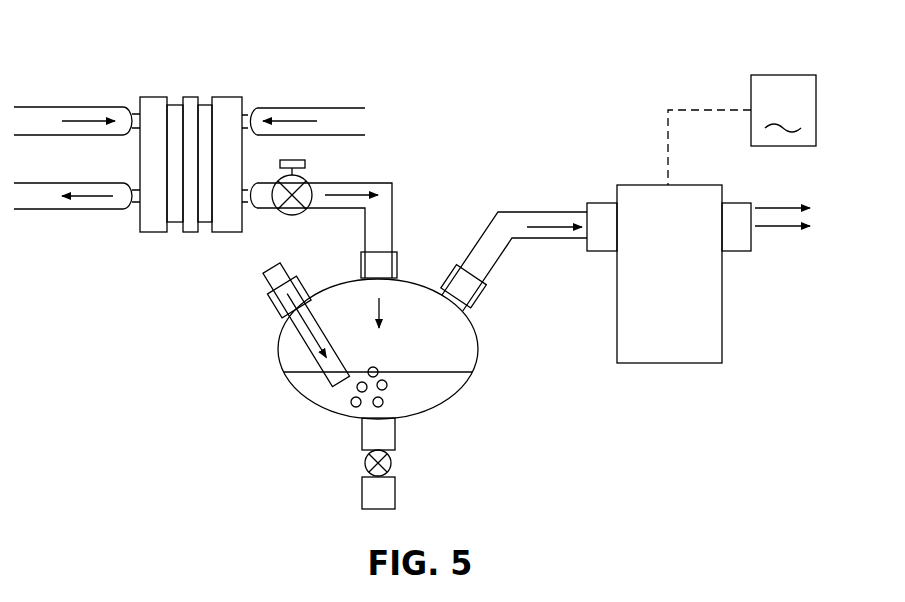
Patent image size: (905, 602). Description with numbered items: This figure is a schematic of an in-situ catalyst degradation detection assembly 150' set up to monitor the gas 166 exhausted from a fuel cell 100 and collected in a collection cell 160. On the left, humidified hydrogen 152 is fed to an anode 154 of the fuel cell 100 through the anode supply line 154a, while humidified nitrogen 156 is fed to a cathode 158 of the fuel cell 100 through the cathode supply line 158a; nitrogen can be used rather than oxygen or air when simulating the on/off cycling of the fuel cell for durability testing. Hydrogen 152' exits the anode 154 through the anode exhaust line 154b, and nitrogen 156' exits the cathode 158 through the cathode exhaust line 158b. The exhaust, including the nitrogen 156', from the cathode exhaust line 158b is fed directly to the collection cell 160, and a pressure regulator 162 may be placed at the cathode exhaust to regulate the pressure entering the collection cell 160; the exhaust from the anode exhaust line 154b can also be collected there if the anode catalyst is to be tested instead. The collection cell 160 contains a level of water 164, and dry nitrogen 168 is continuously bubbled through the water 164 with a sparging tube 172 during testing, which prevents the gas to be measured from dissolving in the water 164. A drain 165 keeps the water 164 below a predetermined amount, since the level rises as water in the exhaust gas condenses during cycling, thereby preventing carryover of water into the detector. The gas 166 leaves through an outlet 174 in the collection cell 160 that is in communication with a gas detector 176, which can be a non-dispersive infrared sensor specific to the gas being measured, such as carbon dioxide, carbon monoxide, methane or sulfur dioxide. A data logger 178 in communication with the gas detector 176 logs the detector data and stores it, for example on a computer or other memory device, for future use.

The fuel cell 100 is at (191, 129).
The humidified hydrogen 152 is at (68, 85).
The hydrogen 152' is at (70, 234).
The anode 154 is at (153, 115).
The anode supply line 154a is at (133, 117).
The anode exhaust line 154b is at (133, 193).
The humidified nitrogen 156 is at (337, 109).
The nitrogen 156' is at (368, 214).
The cathode 158 is at (230, 107).
The cathode supply line 158a is at (244, 113).
The cathode exhaust line 158b is at (245, 203).
The pressure regulator 162 is at (317, 188).
The in-situ catalyst degradation detection assembly 150' is at (487, 294).
The collection cell 160 is at (468, 377).
The water 164 is at (423, 392).
The gas 166 is at (452, 340).
The drain 165 is at (378, 490).
The dry nitrogen 168 is at (268, 307).
The sparging tube 172 is at (265, 282).
The outlet 174 is at (487, 257).
The gas detector 176 is at (685, 303).
The data logger 178 is at (742, 130).